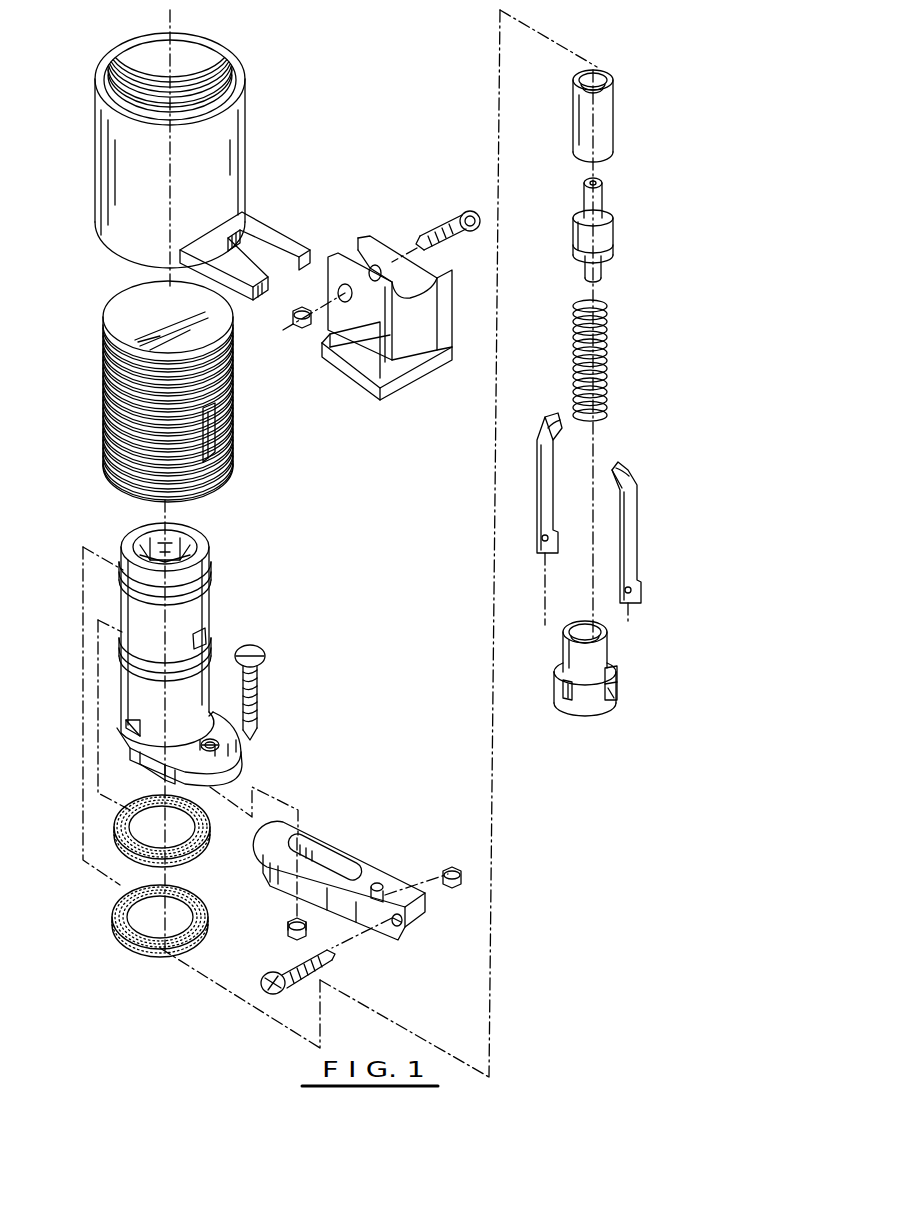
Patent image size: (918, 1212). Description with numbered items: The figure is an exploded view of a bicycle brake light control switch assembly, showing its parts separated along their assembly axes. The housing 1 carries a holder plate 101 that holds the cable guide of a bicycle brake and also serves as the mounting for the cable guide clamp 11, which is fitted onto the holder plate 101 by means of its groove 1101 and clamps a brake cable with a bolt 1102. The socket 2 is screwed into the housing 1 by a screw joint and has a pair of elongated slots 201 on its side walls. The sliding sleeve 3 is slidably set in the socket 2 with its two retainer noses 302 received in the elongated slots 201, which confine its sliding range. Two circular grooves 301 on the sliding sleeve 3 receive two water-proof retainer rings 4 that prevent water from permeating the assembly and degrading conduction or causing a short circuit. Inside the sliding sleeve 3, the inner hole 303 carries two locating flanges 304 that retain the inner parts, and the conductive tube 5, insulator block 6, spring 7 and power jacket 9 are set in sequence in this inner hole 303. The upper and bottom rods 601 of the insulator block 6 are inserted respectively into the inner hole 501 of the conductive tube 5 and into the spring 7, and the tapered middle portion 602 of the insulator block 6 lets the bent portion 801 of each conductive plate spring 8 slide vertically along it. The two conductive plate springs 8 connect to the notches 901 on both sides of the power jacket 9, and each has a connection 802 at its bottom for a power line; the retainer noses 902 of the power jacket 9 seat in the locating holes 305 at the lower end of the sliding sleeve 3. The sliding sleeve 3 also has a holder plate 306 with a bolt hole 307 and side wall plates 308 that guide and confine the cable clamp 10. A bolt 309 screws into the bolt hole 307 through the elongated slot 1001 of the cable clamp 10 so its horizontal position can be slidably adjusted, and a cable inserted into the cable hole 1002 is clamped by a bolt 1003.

The housing 1 is at (250, 156).
The holder plate 101 is at (276, 237).
The socket 2 is at (209, 391).
The elongated slots 201 is at (214, 438).
The sliding sleeve 3 is at (191, 636).
The circular grooves 301 is at (207, 568).
The retainer noses 302 is at (207, 636).
The inner hole 303 is at (172, 532).
The locating flanges 304 is at (192, 540).
The locating holes 305 is at (126, 727).
The holder plate 306 is at (216, 746).
The bolt hole 307 is at (238, 757).
The side wall plates 308 is at (152, 766).
The bolt 309 is at (256, 656).
The retainer rings 4 is at (112, 829).
The conductive tube 5 is at (567, 95).
The inner hole 501 is at (595, 82).
The insulator block 6 is at (592, 230).
The upper and bottom rods 601 is at (603, 200).
The tapered middle portion 602 is at (608, 232).
The spring 7 is at (574, 352).
The conductive plate springs 8 is at (574, 508).
The bent portion 801 is at (548, 432).
The connection 802 is at (540, 546).
The power jacket 9 is at (584, 688).
The notches 901 is at (611, 678).
The retainer noses 902 is at (566, 692).
The cable clamp 10 is at (342, 842).
The elongated slot 1001 is at (306, 836).
The cable hole 1002 is at (380, 885).
The bolt 1003 is at (266, 978).
The cable guide clamp 11 is at (400, 329).
The groove 1101 is at (372, 345).
The bolt 1102 is at (444, 218).